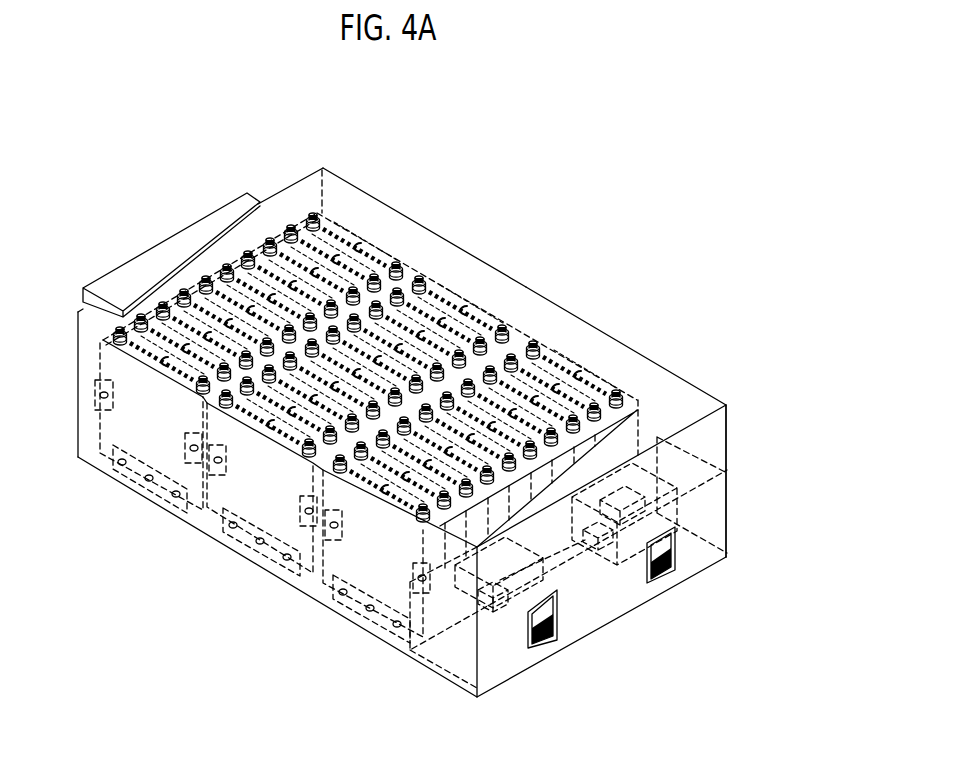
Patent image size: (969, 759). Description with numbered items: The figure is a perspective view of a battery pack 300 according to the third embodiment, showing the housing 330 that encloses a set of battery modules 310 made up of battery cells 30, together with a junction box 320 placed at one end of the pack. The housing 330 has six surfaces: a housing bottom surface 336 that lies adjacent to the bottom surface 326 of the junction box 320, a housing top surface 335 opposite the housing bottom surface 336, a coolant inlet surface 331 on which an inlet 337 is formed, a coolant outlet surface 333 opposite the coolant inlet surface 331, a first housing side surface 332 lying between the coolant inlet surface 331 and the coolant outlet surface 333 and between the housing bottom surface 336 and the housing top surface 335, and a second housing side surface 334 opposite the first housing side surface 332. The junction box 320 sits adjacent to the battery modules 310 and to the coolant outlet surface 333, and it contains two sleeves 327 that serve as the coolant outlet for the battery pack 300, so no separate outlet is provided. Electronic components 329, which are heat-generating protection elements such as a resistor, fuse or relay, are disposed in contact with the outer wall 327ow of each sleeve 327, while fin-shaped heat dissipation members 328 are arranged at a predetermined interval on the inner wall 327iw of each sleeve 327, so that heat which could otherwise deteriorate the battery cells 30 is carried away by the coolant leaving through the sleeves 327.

The battery pack 300 is at (589, 153).
The battery cells 30 is at (315, 566).
The battery modules 310 is at (318, 597).
The junction box 320 is at (678, 444).
The bottom surface 326 is at (423, 655).
The sleeves 327 is at (683, 655).
The outer wall 327ow is at (557, 600).
The inner wall 327iw is at (553, 622).
The heat dissipation members 328 is at (547, 633).
The electronic components 329 is at (560, 590).
The housing 330 is at (602, 331).
The coolant inlet surface 331 is at (282, 208).
The first housing side surface 332 is at (527, 307).
The coolant outlet surface 333 is at (710, 457).
The second housing side surface 334 is at (78, 445).
The housing top surface 335 is at (436, 258).
The housing bottom surface 336 is at (200, 548).
The inlet 337 is at (192, 240).